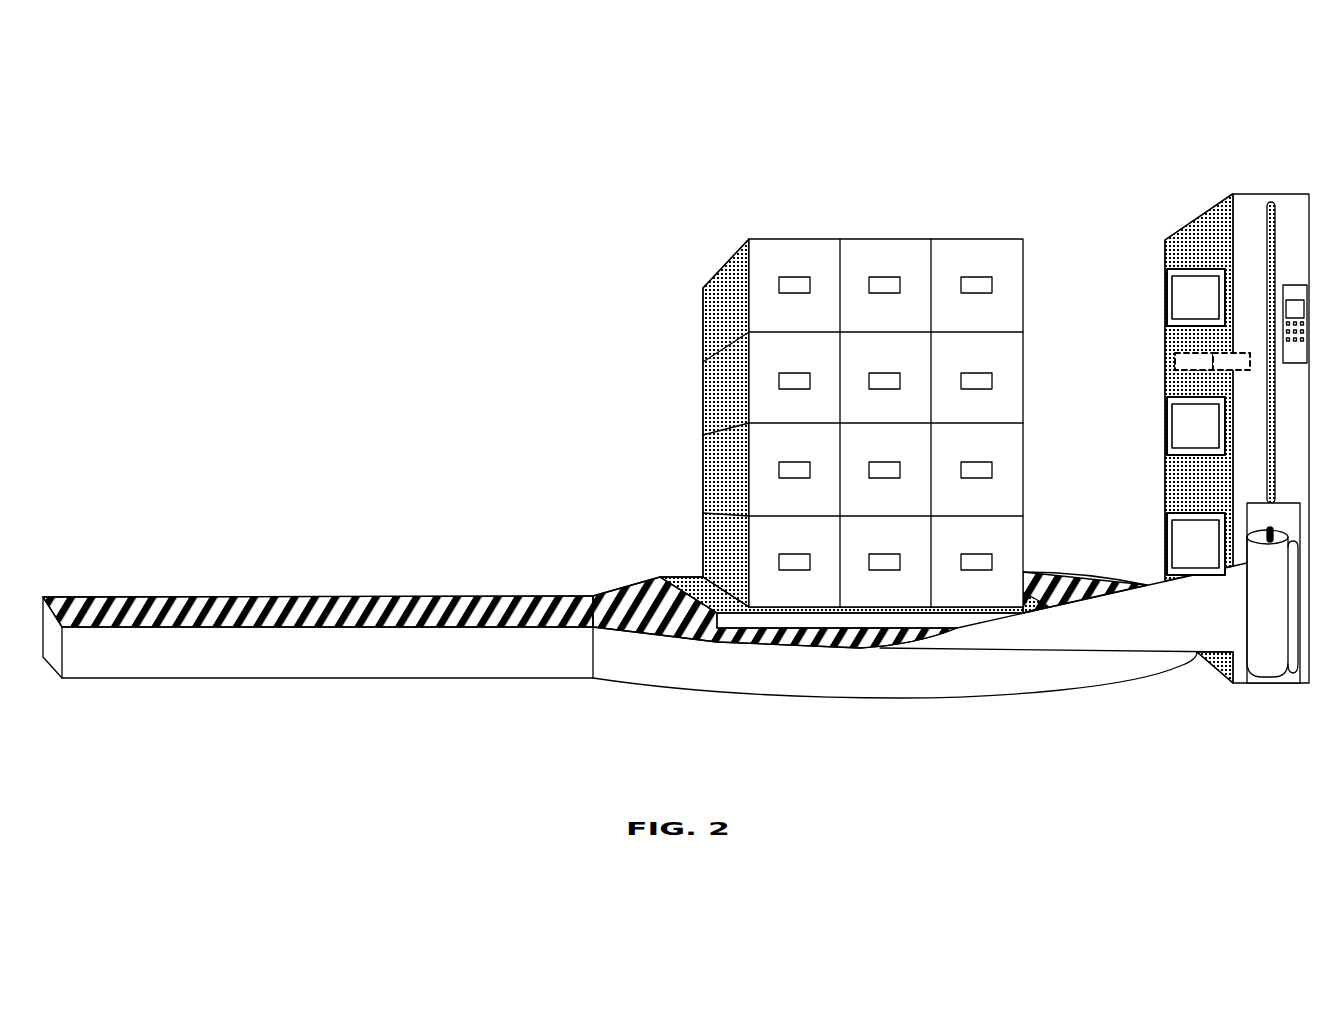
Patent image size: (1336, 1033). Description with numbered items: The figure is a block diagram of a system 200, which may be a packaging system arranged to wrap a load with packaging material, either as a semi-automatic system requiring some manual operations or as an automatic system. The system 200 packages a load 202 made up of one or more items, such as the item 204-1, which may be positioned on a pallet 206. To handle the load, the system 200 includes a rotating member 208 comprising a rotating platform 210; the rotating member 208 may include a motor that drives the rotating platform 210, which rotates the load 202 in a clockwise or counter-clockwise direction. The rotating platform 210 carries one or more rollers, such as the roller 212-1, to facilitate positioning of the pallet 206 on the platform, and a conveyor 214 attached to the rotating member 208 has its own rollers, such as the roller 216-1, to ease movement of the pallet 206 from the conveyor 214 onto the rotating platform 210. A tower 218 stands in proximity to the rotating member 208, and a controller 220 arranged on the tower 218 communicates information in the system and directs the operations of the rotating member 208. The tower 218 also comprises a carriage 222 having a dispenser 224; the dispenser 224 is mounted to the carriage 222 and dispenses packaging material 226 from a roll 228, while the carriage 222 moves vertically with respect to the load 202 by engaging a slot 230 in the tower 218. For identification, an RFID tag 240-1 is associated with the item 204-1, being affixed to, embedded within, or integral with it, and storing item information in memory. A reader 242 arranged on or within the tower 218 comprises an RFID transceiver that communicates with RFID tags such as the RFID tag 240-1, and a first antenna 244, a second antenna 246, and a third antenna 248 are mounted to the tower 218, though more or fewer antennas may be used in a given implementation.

The system 200 is at (696, 80).
The load 202 is at (809, 387).
The item 204-1 is at (703, 315).
The pallet 206 is at (677, 577).
The rotating member 208 is at (645, 638).
The rotating platform 210 is at (920, 630).
The roller 212-1 is at (593, 596).
The conveyor 214 is at (318, 637).
The roller 216-1 is at (69, 597).
The tower 218 is at (1190, 427).
The controller 220 is at (1294, 285).
The carriage 222 is at (1190, 627).
The dispenser 224 is at (1293, 683).
The packaging material 226 is at (1113, 652).
The roll 228 is at (1251, 683).
The slot 230 is at (1267, 215).
The RFID tag 240-1 is at (795, 277).
The reader 242 is at (1175, 361).
The first antenna 244 is at (1167, 298).
The second antenna 246 is at (1167, 425).
The third antenna 248 is at (1167, 550).